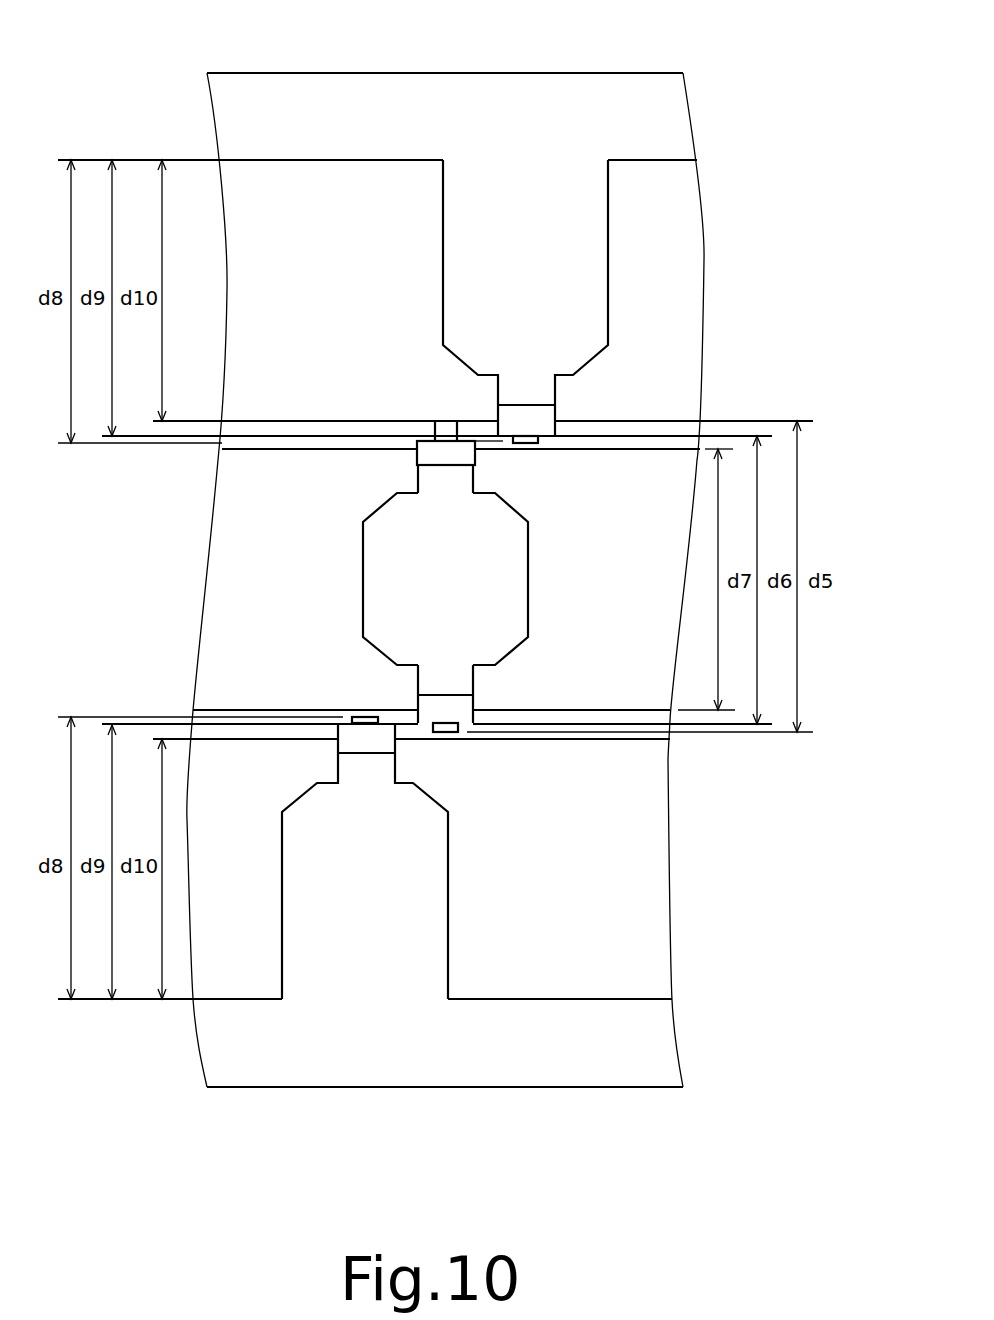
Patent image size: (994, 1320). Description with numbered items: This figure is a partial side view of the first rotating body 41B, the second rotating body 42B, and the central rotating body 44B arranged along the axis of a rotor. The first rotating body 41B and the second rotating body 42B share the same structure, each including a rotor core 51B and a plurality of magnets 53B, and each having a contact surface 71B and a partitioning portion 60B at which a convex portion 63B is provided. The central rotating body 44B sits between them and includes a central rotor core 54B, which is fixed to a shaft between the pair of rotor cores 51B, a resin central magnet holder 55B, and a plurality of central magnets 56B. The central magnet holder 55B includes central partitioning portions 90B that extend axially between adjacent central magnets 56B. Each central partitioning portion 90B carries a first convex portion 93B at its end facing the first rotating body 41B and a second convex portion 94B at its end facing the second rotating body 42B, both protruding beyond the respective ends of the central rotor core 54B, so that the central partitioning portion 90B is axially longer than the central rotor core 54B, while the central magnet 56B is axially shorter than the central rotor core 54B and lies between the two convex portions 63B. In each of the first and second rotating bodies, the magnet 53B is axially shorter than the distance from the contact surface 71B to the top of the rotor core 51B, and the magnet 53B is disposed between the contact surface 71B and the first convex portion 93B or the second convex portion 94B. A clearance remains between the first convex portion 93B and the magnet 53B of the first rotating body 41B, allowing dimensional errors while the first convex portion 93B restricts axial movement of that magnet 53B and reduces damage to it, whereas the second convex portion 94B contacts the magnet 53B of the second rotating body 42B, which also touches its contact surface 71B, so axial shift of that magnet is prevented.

The first rotating body 41B is at (683, 868).
The second rotating body 42B is at (765, 292).
The central rotating body 44B is at (133, 548).
The rotor core 51B is at (620, 421).
The magnet 53B is at (308, 228).
The central rotor core 54B is at (660, 438).
The central magnet holder 55B is at (355, 592).
The central magnet 56B is at (268, 500).
The partitioning portion 60B is at (535, 245).
The convex portion 63B is at (527, 438).
The contact surface 71B is at (653, 162).
The central partitioning portion 90B is at (400, 567).
The first convex portion 93B is at (448, 728).
The second convex portion 94B is at (440, 436).